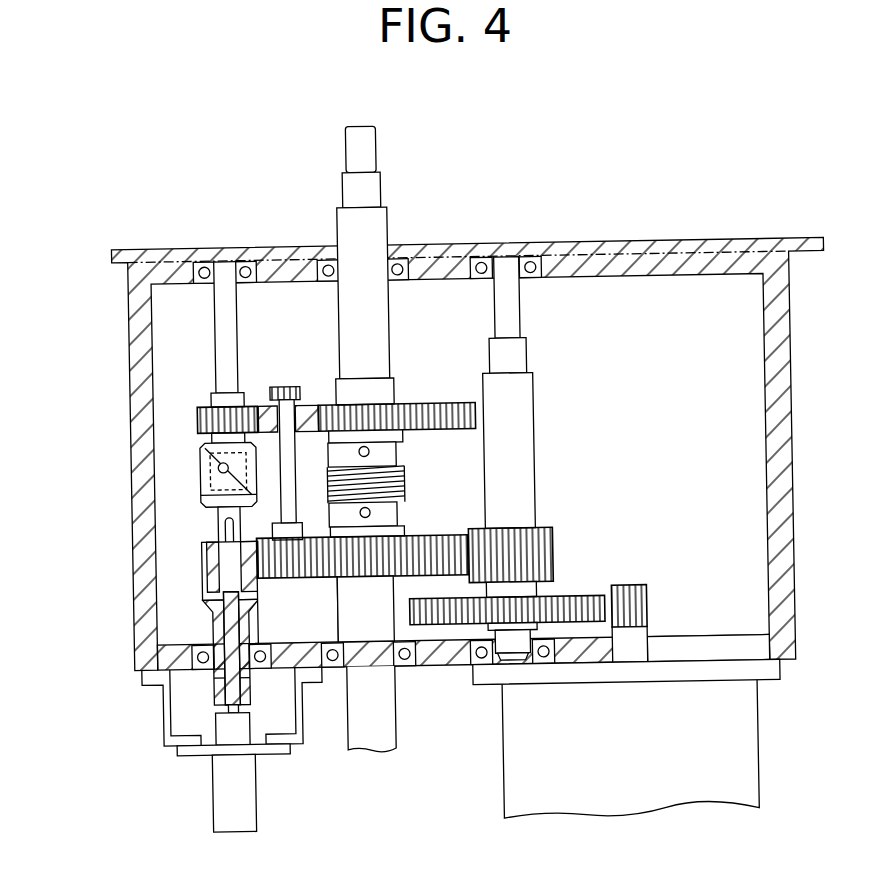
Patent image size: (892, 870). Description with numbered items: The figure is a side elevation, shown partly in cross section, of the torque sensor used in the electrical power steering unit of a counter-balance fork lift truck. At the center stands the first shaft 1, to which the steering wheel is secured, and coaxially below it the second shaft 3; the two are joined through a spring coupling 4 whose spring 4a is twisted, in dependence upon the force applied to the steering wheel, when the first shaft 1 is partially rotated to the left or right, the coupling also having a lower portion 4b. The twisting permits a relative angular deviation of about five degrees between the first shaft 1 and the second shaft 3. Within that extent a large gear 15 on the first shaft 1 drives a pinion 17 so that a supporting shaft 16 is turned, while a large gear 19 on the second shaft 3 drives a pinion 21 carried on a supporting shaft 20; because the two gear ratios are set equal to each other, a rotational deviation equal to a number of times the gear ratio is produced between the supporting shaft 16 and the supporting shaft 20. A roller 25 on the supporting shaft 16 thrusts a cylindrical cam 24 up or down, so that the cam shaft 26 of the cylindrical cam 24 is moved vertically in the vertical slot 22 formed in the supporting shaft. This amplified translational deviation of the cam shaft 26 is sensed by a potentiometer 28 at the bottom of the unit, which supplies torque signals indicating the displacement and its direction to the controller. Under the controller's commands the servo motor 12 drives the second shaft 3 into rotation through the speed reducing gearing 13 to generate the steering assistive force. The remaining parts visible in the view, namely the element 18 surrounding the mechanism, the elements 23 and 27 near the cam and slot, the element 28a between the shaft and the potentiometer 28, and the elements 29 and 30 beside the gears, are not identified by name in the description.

The first shaft 1 is at (395, 214).
The second shaft 3 is at (395, 711).
The spring coupling 4 is at (409, 489).
The spring 4a is at (405, 469).
The lower end of coil spring 4b is at (399, 504).
The servo motor 12 is at (747, 755).
The speed reducing gearing 13 is at (554, 550).
The large gear 15 is at (436, 403).
The supporting shaft 16 is at (219, 309).
The pinion 17 is at (201, 406).
The casing 18 is at (131, 294).
The large gear 19 is at (303, 575).
The supporting shaft 20 is at (207, 628).
The pinion 21 is at (198, 554).
The vertical slot 22 is at (219, 596).
The bearing block 23 is at (199, 484).
The cylindrical cam 24 is at (200, 461).
The roller 25 is at (200, 436).
The cam shaft 26 is at (217, 516).
The slot 27 is at (224, 526).
The potentiometer 28 is at (211, 794).
The coupling 28a is at (226, 679).
The pin 29 is at (291, 384).
The nut 30 is at (284, 384).